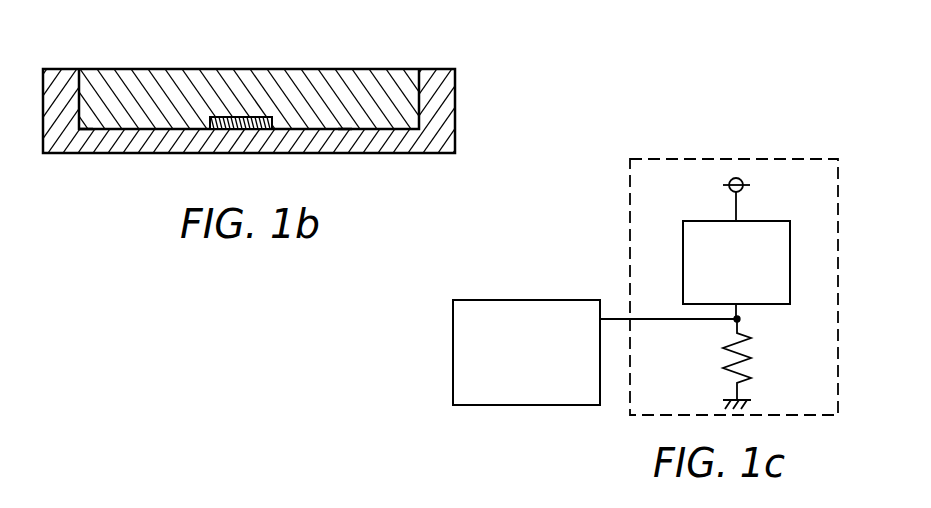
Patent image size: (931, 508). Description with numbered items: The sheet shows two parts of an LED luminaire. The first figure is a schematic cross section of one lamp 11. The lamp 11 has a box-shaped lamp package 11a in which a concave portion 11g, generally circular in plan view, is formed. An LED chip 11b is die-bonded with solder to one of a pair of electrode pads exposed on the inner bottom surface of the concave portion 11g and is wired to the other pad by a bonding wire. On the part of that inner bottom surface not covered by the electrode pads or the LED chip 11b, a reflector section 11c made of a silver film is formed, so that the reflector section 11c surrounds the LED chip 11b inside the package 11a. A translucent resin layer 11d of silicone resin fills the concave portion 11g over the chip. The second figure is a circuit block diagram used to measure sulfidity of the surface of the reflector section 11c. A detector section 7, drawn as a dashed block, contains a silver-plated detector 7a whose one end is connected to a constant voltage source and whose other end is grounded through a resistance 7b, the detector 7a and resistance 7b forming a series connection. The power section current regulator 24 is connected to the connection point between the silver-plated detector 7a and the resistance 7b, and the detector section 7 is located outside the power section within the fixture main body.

In FIG. 1B, the lamp 11 is at (430, 69).
In FIG. 1B, the lamp package 11a is at (442, 90).
In FIG. 1B, the LED chip 11b is at (214, 117).
In FIG. 1B, the reflector section 11c is at (93, 129).
In FIG. 1B, the translucent resin layer 11d is at (303, 90).
In FIG. 1B, the concave portion 11g is at (79, 103).
In FIG. 1C, the detector section 7 is at (678, 157).
In FIG. 1C, the silver-plated detector 7a is at (775, 221).
In FIG. 1C, the resistance 7b is at (745, 362).
In FIG. 1C, the power section current regulator 24 is at (565, 300).